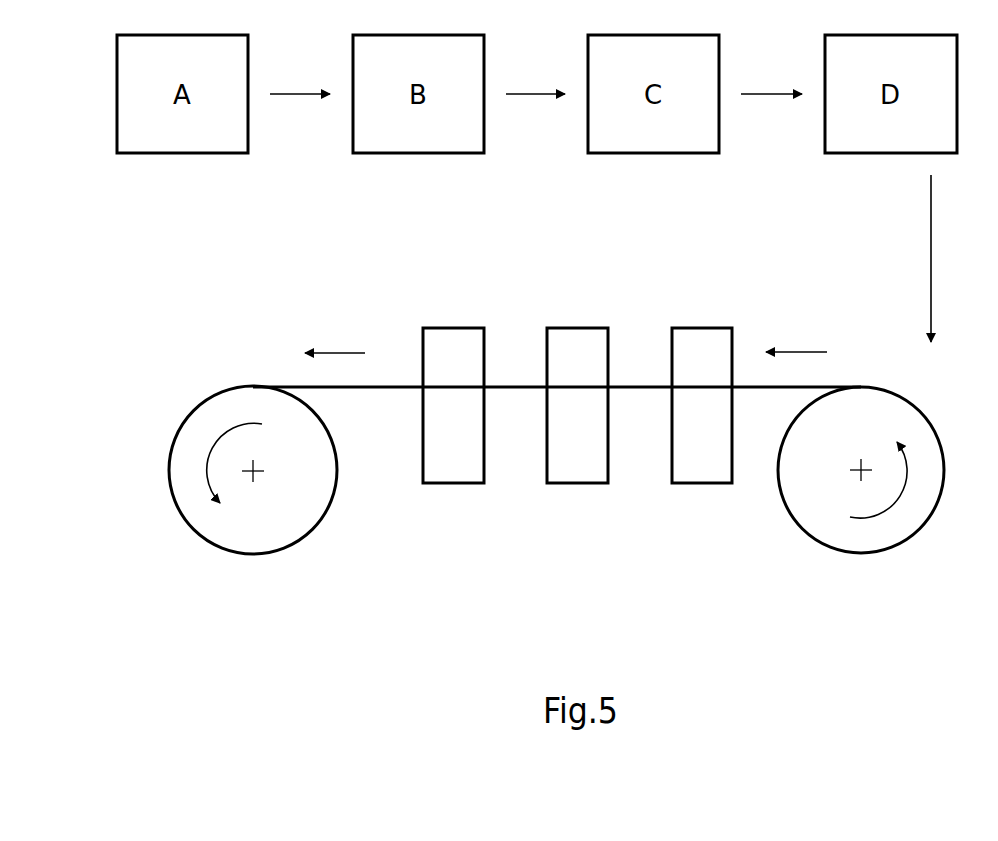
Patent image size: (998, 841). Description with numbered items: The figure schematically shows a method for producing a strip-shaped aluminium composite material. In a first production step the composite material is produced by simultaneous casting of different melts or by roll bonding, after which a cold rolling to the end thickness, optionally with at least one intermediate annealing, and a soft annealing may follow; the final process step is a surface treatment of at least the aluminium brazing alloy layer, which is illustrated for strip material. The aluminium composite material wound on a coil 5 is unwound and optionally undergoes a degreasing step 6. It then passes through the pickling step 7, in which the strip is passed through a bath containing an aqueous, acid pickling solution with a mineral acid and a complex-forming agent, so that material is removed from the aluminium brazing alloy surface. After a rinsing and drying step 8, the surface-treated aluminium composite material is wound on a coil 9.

The coil 5 is at (890, 563).
The degreasing step 6 is at (715, 483).
The pickling step 7 is at (590, 483).
The rinsing and drying step 8 is at (467, 483).
The coil 9 is at (269, 554).